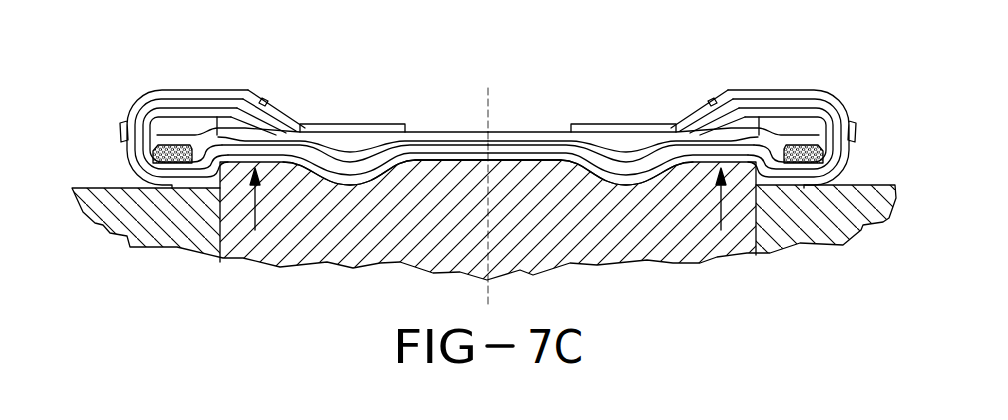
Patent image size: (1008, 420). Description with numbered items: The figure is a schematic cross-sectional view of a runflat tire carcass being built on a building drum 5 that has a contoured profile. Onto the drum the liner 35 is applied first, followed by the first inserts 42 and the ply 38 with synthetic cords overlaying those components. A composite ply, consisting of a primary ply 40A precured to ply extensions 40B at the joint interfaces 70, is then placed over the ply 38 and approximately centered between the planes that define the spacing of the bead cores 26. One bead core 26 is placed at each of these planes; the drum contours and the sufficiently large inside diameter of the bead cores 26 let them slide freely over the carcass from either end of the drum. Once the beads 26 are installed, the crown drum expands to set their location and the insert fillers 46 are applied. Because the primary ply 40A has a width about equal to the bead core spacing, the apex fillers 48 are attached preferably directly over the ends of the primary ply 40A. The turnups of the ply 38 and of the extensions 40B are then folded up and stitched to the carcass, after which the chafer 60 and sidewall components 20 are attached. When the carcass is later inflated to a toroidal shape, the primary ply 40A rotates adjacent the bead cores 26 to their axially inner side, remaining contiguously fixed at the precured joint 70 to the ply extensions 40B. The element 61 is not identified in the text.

The building drum 5 is at (325, 268).
The sidewall component 20 is at (350, 130).
The bead core 26 is at (165, 148).
The liner 35 is at (520, 158).
The ply 38 is at (440, 148).
The primary ply 40A is at (474, 140).
The ply extension 40B is at (170, 165).
The first insert 42 is at (335, 170).
The insert filler 46 is at (362, 152).
The apex filler 48 is at (187, 126).
The chafer 60 is at (145, 98).
The inner wrap layer 61 is at (132, 169).
The joint interface 70 is at (227, 130).